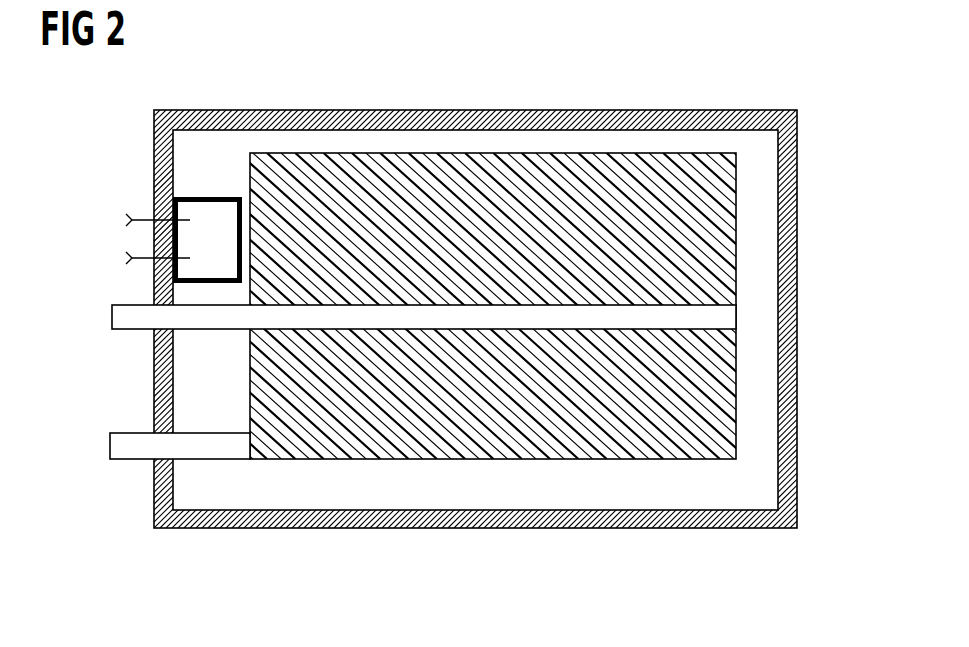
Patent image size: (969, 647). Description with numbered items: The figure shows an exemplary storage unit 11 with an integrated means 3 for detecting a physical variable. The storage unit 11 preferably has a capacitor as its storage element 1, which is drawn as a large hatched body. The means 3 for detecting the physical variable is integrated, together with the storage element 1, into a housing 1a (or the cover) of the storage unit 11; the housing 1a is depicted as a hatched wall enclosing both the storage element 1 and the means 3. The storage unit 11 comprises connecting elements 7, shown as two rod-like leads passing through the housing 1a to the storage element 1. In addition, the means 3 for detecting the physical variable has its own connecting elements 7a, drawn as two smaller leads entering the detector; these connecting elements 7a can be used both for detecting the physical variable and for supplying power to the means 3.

The storage element 1 is at (417, 427).
The housing 1a is at (798, 303).
The means for detecting a physical variable 3 is at (205, 197).
The connecting elements 7 is at (100, 312).
The connecting elements of the detecting means 7a is at (105, 239).
The storage unit 11 is at (484, 299).